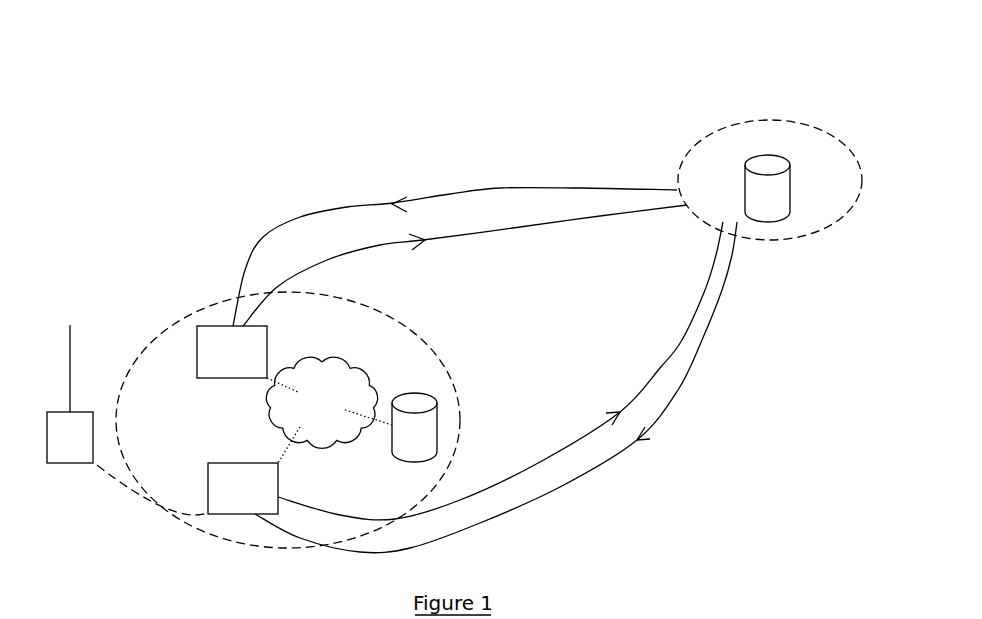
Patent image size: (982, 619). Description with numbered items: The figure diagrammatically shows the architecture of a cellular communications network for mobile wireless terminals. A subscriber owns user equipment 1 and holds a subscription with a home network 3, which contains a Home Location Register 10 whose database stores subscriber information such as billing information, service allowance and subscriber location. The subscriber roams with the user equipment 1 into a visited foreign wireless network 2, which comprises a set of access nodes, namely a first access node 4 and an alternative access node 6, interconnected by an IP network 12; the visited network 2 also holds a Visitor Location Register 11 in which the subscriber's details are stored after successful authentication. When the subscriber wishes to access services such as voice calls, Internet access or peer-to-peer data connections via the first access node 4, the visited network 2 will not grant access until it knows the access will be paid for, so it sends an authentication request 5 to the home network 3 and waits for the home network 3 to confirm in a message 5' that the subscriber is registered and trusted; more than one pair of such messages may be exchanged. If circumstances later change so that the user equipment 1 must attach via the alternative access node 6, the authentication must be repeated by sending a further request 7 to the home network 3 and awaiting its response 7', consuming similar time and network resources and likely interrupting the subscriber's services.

The user equipment 1 is at (70, 373).
The visited foreign wireless network 2 is at (347, 325).
The home network 3 is at (712, 170).
The first access node 4 is at (233, 514).
The authentication request 5 is at (535, 371).
The confirmation message 5' is at (496, 387).
The alternative access node 6 is at (207, 326).
The authentication request to home network 7 is at (465, 203).
The response from home network 7' is at (455, 203).
The Home Location Register 10 is at (767, 207).
The Visitor Location Register 11 is at (413, 445).
The IP network 12 is at (357, 377).